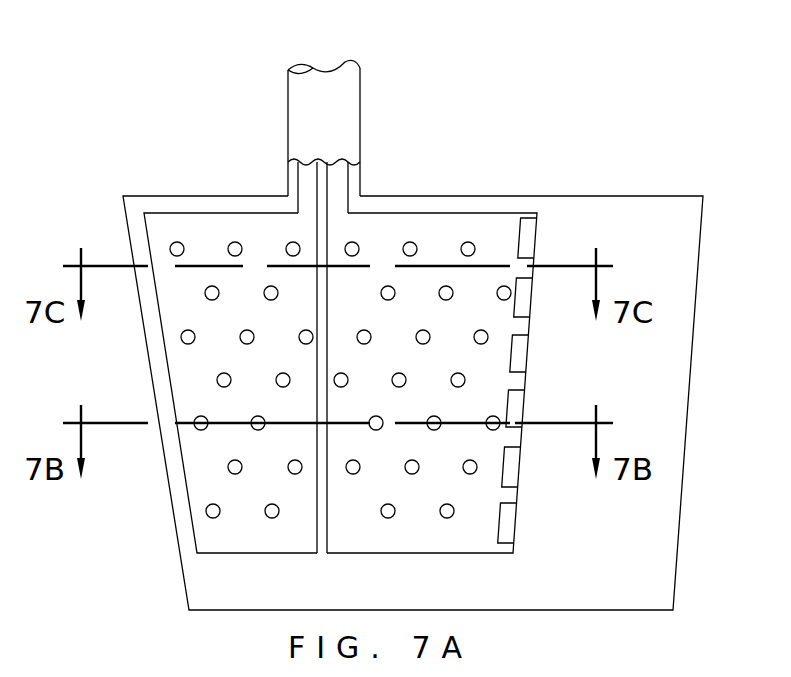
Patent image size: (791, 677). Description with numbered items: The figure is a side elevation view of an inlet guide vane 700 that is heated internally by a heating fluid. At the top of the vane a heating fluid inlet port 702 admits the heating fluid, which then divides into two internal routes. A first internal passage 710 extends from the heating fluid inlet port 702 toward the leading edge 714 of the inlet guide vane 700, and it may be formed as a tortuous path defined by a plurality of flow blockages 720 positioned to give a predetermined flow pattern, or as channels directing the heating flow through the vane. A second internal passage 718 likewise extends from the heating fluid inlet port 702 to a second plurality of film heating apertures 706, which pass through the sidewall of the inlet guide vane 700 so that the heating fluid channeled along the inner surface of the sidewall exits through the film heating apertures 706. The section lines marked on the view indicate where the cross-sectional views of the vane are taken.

The inlet guide vane 700 is at (150, 100).
The heating fluid inlet port 702 is at (313, 67).
The second plurality of film heating apertures 706 is at (529, 240).
The first internal passage 710 is at (309, 185).
The leading edge 714 is at (138, 302).
The second internal passage 718 is at (338, 184).
The flow blockages 720 is at (213, 290).